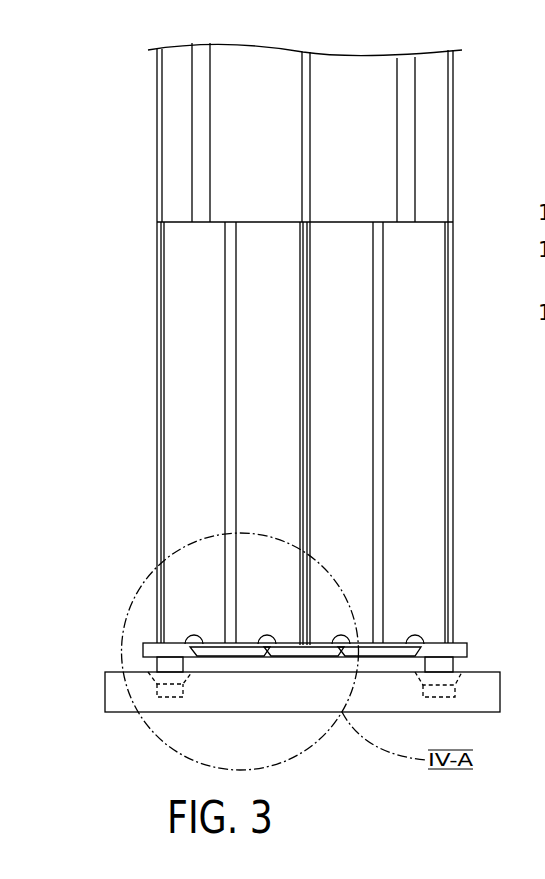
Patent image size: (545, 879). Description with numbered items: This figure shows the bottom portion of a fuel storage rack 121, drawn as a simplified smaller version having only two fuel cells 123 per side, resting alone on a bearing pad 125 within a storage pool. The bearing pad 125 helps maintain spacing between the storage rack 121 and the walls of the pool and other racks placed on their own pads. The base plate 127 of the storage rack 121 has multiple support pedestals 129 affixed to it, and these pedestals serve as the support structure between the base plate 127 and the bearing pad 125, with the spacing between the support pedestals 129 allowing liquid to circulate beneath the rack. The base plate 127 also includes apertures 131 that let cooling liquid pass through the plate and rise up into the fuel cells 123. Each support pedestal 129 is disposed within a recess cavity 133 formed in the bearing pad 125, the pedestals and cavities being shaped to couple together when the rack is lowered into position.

The storage rack 121 is at (337, 112).
The fuel cells 123 is at (175, 170).
The bearing pad 125 is at (118, 713).
The base plate 127 is at (143, 652).
The support pedestals 129 is at (157, 666).
The apertures 131 is at (197, 648).
The recess cavity 133 is at (185, 687).